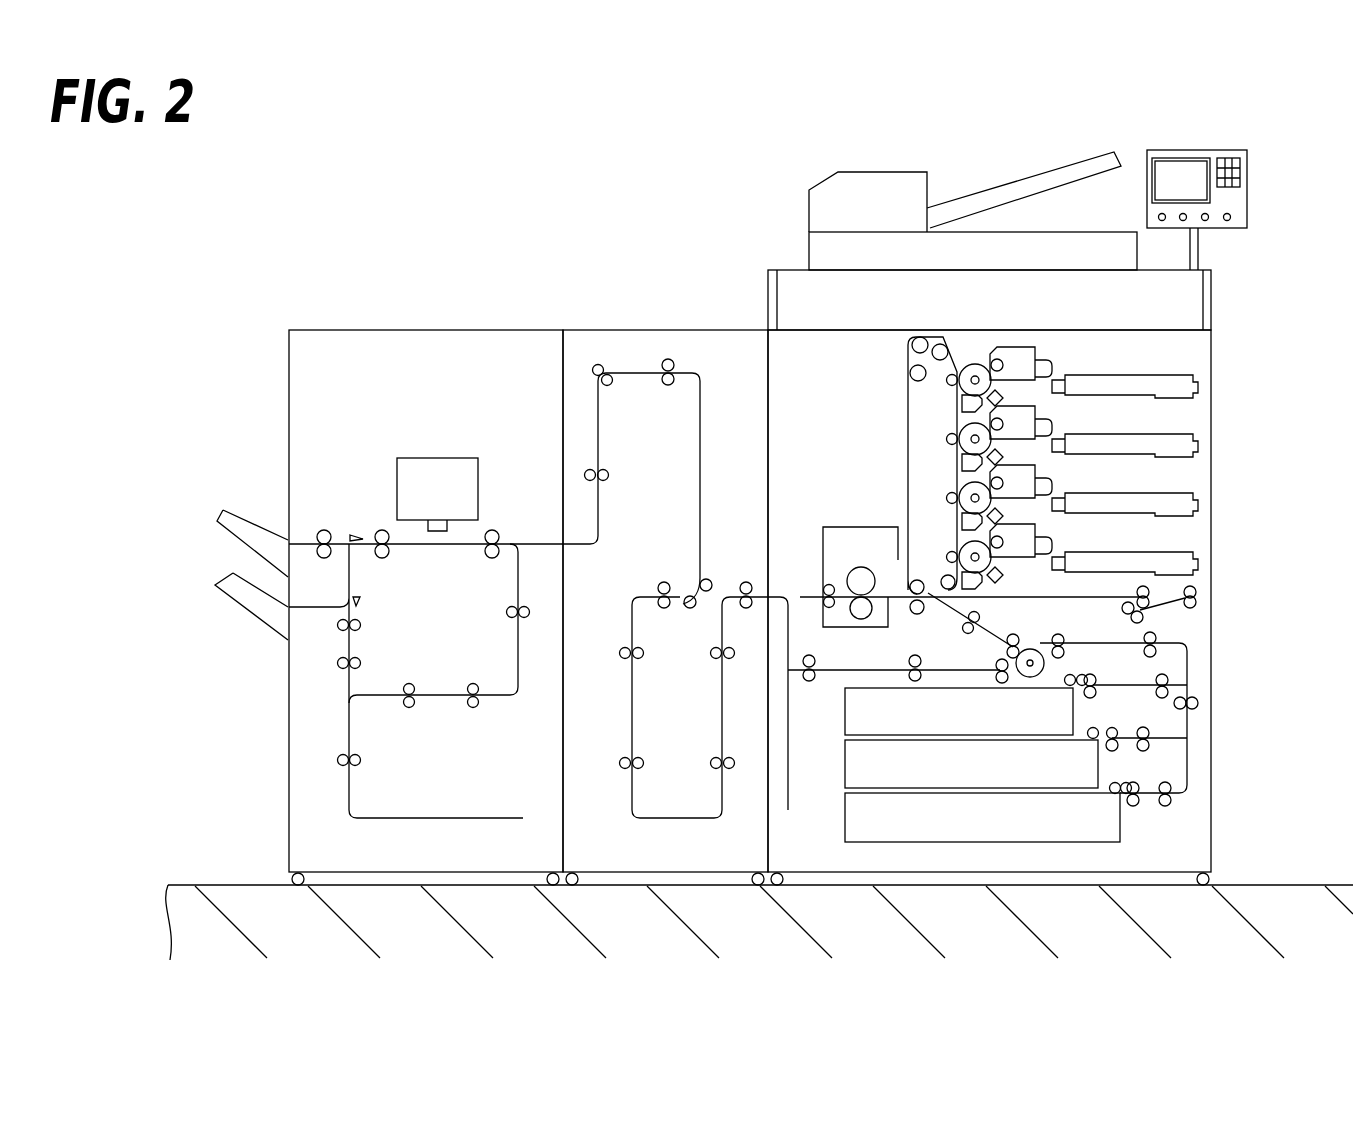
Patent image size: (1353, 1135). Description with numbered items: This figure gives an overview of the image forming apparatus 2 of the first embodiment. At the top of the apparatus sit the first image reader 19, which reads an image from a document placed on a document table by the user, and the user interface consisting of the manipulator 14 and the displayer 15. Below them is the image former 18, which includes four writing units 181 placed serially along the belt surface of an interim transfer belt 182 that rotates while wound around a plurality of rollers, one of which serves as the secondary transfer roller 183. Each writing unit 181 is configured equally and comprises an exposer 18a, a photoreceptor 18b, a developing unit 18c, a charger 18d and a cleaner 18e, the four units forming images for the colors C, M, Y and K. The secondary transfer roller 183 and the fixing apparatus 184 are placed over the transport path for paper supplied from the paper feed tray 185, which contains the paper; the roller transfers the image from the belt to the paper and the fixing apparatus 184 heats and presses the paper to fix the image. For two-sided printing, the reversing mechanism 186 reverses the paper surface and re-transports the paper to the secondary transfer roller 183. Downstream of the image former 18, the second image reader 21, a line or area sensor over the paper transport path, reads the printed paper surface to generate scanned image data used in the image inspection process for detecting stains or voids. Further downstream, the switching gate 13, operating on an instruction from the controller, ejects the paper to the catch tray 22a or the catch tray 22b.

The image forming apparatus 2 is at (1105, 128).
The switching gate 13 is at (357, 535).
The manipulator 14 is at (1228, 181).
The displayer 15 is at (1184, 165).
The image former 18 is at (948, 439).
The exposer 18a is at (1110, 368).
The photoreceptor 18b is at (972, 350).
The developing unit 18c is at (1047, 350).
The charger 18d is at (993, 397).
The cleaner 18e is at (957, 407).
The first image reader 19 is at (803, 283).
The second image reader 21 is at (433, 456).
The catch tray 22a is at (235, 512).
The catch tray 22b is at (238, 575).
The writing unit 181 is at (1224, 382).
The interim transfer belt 182 is at (903, 441).
The secondary transfer roller 183 is at (917, 608).
The fixing apparatus 184 is at (843, 527).
The paper feed tray 185 is at (977, 856).
The reversing mechanism 186 is at (799, 723).